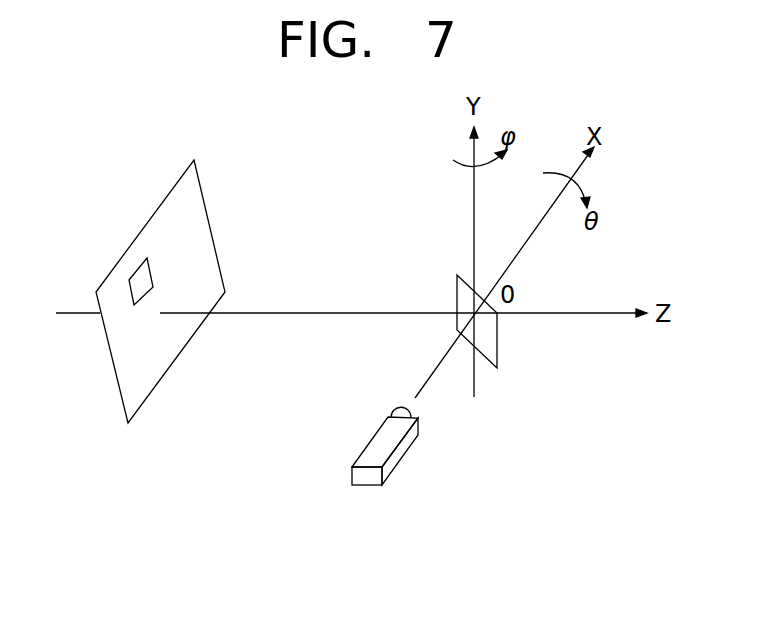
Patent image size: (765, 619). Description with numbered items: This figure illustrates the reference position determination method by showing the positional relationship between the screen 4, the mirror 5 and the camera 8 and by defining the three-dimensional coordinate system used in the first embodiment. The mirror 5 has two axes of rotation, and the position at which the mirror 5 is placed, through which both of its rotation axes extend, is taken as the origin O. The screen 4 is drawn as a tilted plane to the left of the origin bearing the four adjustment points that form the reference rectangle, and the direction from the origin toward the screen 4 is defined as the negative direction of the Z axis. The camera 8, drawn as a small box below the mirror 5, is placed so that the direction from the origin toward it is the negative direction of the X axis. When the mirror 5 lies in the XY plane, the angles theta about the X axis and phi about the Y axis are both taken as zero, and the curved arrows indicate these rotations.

The screen 4 is at (175, 363).
The mirror 5 is at (497, 340).
The camera 8 is at (408, 455).